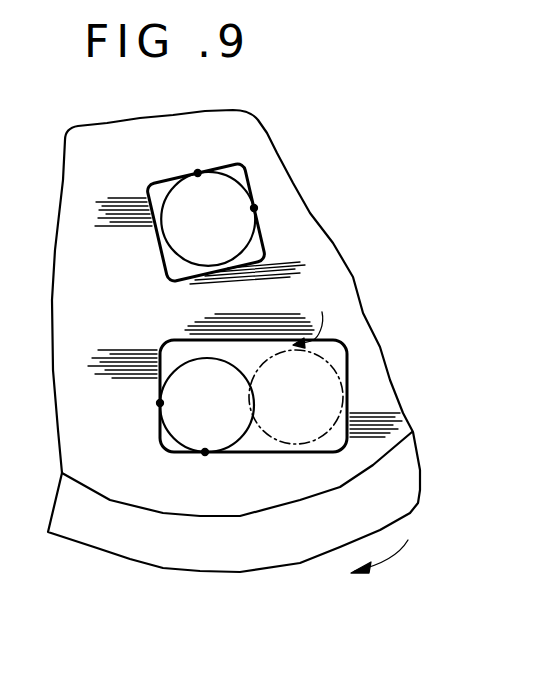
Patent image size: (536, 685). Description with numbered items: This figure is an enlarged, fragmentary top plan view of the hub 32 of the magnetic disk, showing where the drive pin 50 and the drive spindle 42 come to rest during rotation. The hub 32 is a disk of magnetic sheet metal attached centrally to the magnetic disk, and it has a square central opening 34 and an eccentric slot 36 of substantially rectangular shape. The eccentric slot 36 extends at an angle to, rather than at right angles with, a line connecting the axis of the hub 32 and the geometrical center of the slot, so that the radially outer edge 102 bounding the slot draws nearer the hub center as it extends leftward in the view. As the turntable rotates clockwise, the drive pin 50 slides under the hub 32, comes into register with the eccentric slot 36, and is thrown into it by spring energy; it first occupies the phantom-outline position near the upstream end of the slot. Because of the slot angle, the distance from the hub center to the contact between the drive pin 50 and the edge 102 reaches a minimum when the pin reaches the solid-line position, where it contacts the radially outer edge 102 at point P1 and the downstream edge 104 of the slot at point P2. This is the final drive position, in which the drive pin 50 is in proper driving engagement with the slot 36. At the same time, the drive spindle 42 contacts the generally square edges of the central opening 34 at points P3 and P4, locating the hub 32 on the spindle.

The hub 32 is at (323, 260).
The central opening 34 is at (153, 246).
The eccentric slot 36 is at (313, 319).
The drive spindle 42 is at (253, 200).
The drive pin 50 is at (243, 432).
The radially outer edge 102 is at (232, 453).
The downstream edge 104 is at (163, 351).
The point of contact P1 is at (204, 454).
The point of contact P2 is at (158, 403).
The point of contact P3 is at (197, 170).
The point of contact P4 is at (257, 207).